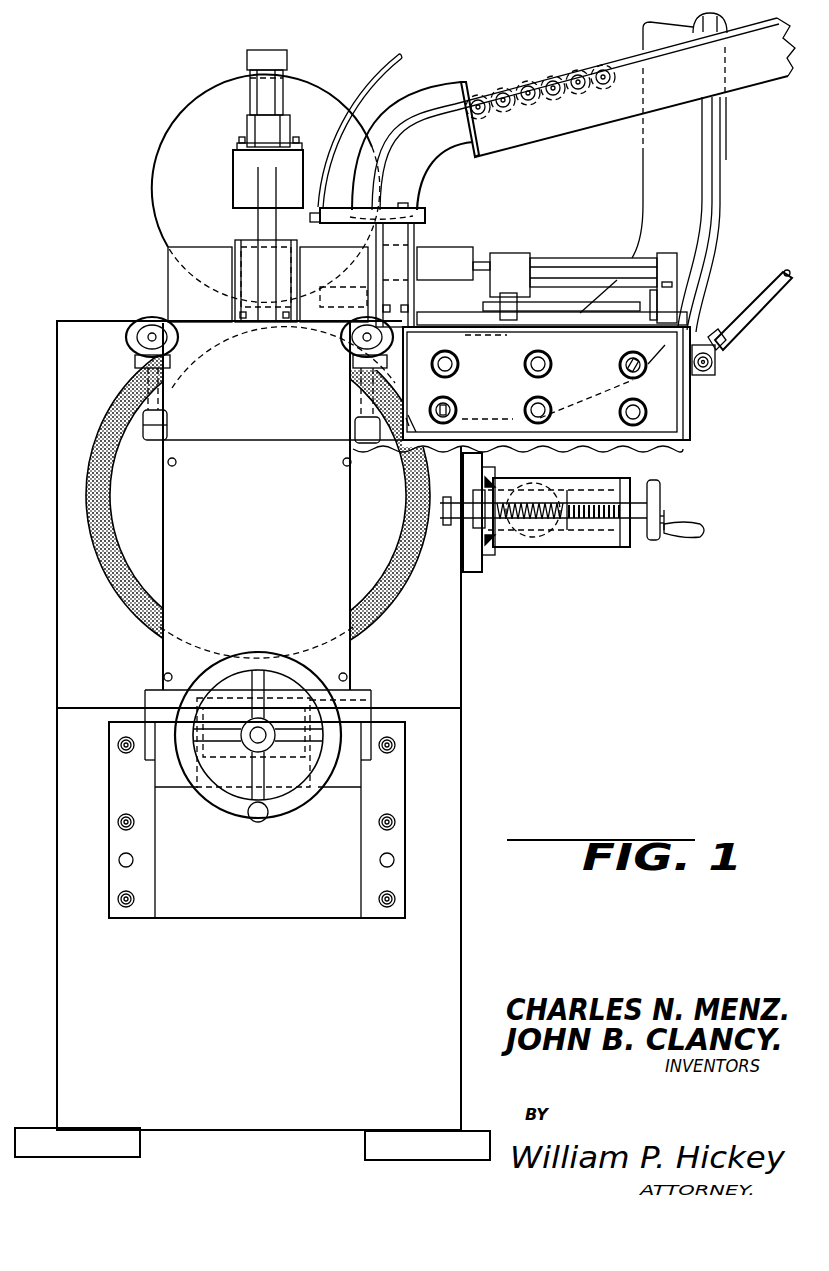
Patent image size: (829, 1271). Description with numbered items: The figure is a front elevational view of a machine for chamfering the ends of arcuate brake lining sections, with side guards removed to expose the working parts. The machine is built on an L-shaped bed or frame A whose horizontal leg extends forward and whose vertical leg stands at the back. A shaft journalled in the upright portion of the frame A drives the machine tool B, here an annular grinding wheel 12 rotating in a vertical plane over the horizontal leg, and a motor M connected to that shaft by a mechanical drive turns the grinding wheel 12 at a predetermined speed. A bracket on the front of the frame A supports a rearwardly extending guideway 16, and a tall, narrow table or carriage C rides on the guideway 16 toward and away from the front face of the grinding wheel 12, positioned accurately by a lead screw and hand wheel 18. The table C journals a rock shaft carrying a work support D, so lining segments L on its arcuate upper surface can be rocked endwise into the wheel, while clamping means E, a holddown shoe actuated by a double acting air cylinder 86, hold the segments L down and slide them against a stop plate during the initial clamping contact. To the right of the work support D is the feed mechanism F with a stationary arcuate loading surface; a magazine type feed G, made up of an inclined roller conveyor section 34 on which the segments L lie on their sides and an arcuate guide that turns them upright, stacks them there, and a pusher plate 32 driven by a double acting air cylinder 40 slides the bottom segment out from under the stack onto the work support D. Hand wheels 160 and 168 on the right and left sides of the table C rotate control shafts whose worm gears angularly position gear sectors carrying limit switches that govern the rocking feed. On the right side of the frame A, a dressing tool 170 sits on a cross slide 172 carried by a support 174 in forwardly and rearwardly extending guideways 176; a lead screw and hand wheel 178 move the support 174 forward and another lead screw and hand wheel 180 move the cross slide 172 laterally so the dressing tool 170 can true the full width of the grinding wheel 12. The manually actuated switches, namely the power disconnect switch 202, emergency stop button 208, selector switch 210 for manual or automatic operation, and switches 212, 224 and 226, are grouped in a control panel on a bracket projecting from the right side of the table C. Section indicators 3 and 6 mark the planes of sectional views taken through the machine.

The section line 3- 3 is at (272, 18).
The section line 6- 6 is at (400, 248).
The annular grinding wheel 12 is at (104, 432).
The guideway 16 is at (233, 690).
The lead screw and hand wheel 18 is at (295, 824).
The pusher plate 32 is at (440, 248).
The inclined roller conveyor section 34 is at (575, 112).
The double acting air cylinder 40 is at (588, 262).
The double acting air cylinder 86 is at (252, 125).
The hand wheel 160 is at (347, 353).
The hand wheel 168 is at (170, 356).
The dressing tool 170 is at (416, 534).
The cross slide 172 is at (590, 525).
The support 174 is at (515, 547).
The guideways 176 is at (495, 483).
The lead screw and hand wheel 178 is at (538, 538).
The lead screw and hand wheel 180 is at (660, 492).
The disconnect switch 202 is at (643, 372).
The emergency stop button 208 is at (457, 362).
The selector switch 210 is at (455, 410).
The manually actuated switch 212 is at (550, 362).
The manually actuated switch 224 is at (547, 417).
The manually actuated switch 226 is at (647, 417).
The L-shaped bed or frame A is at (54, 663).
The machine tool B is at (225, 495).
The movable table or carriage C is at (268, 414).
The work support D is at (233, 241).
The clamping means E is at (231, 164).
The feed mechanism F is at (423, 237).
The magazine type feed G is at (355, 78).
The lining segments L is at (246, 234).
The motor M is at (305, 95).